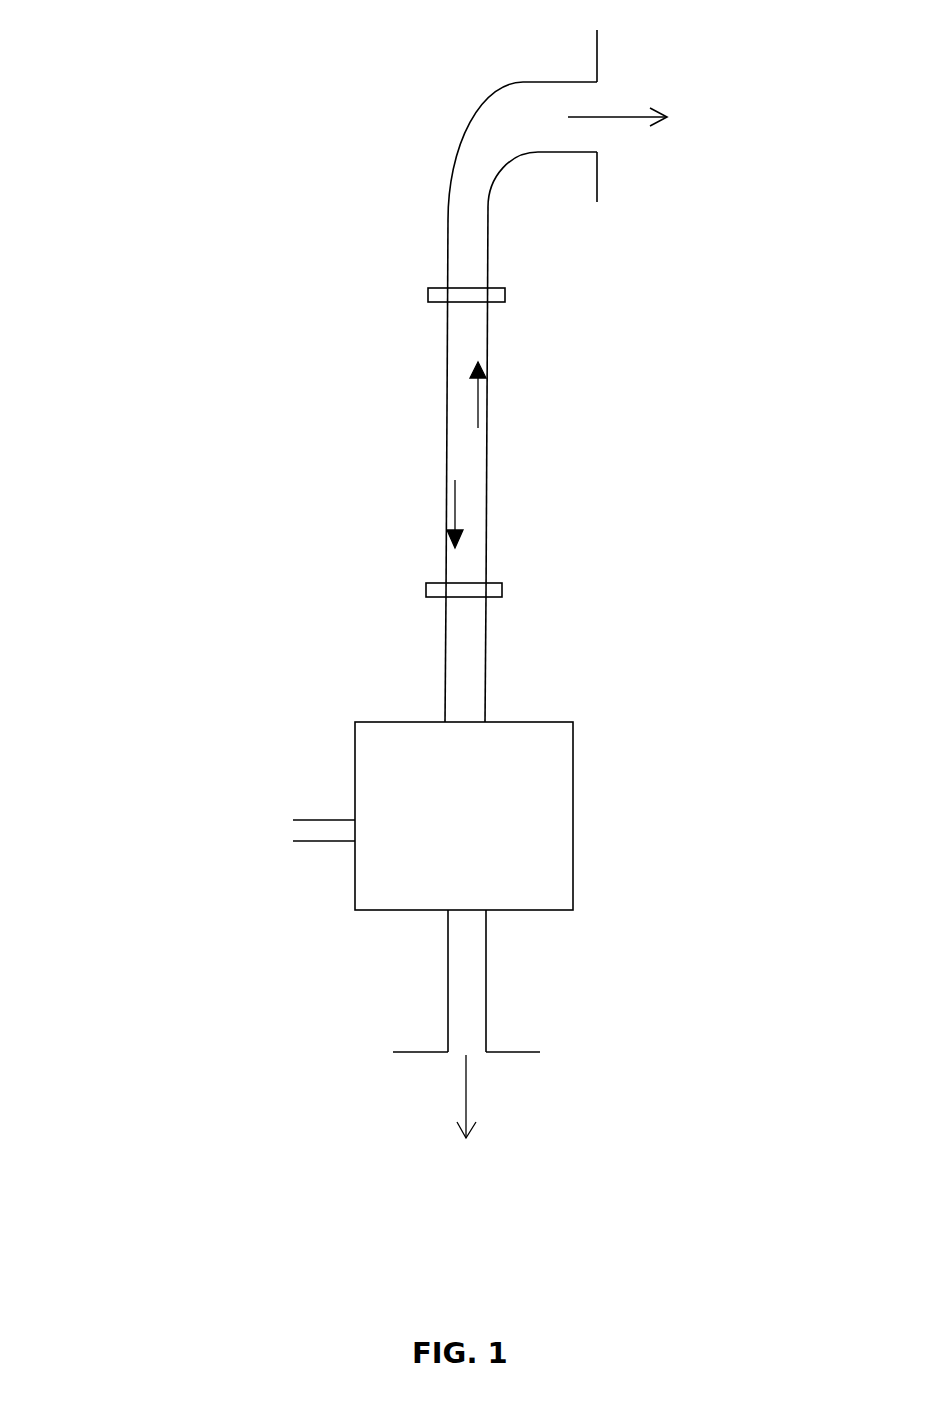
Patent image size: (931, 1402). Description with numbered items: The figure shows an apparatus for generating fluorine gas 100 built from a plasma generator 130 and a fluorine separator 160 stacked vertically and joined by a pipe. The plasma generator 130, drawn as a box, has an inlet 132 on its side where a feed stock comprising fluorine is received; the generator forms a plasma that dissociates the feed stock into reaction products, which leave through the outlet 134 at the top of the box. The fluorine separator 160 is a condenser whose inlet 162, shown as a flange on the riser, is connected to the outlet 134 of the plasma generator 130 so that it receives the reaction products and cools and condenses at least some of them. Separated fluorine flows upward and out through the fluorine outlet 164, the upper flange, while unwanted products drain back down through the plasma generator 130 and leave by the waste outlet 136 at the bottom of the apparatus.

The apparatus for generating fluorine gas 100 is at (402, 602).
The plasma generator 130 is at (528, 816).
The inlet 132 is at (259, 847).
The outlet 134 is at (500, 659).
The waste outlet 136 is at (466, 1046).
The fluorine separator 160 is at (556, 313).
The inlet 162 is at (526, 573).
The fluorine outlet 164 is at (528, 279).